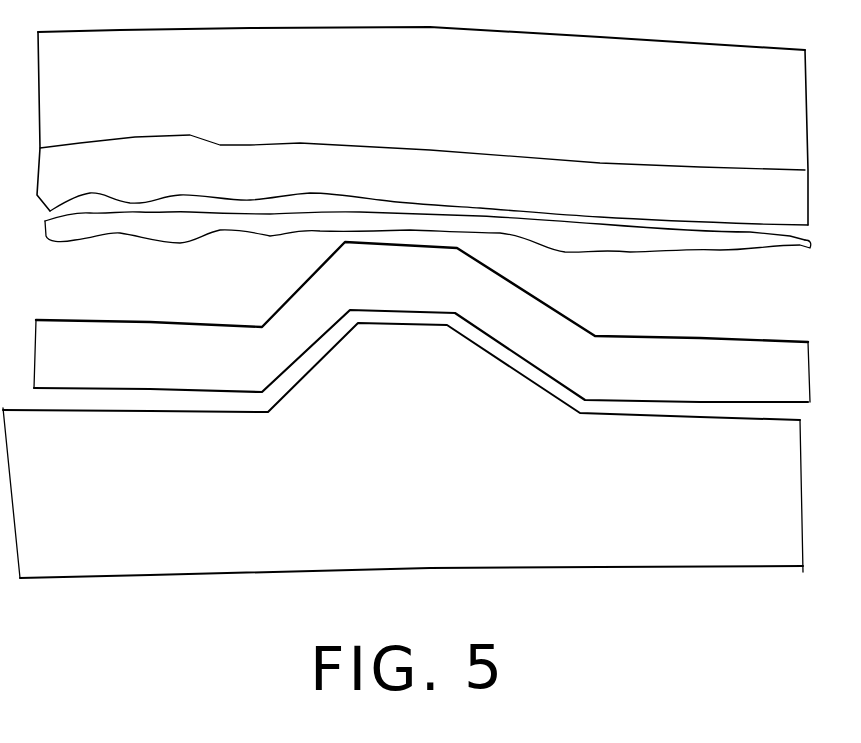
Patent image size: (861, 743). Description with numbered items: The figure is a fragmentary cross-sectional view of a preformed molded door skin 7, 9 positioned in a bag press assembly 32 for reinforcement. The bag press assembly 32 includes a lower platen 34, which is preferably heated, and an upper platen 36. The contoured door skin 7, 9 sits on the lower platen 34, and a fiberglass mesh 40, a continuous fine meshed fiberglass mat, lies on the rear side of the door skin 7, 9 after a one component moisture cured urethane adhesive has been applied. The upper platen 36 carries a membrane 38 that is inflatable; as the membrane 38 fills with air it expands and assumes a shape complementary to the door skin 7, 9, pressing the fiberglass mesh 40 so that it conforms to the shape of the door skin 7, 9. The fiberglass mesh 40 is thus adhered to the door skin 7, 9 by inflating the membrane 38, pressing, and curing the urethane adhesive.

The bag press assembly 32 is at (641, 640).
The lower platen 34 is at (770, 541).
The upper platen 36 is at (772, 127).
The membrane 38 is at (424, 180).
The fiberglass mesh 40 is at (787, 253).
The door skin 7 is at (422, 322).
The door skin 9 is at (422, 292).